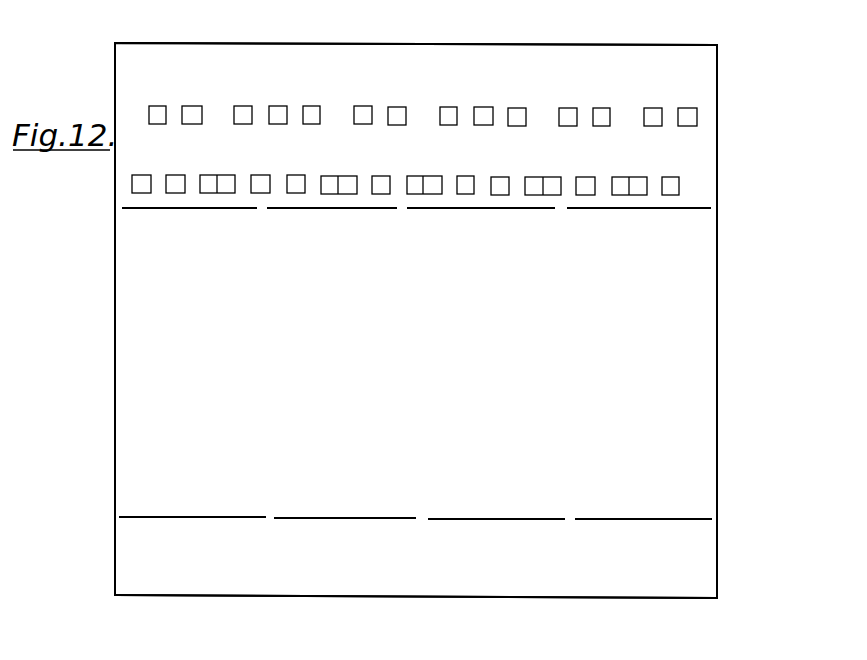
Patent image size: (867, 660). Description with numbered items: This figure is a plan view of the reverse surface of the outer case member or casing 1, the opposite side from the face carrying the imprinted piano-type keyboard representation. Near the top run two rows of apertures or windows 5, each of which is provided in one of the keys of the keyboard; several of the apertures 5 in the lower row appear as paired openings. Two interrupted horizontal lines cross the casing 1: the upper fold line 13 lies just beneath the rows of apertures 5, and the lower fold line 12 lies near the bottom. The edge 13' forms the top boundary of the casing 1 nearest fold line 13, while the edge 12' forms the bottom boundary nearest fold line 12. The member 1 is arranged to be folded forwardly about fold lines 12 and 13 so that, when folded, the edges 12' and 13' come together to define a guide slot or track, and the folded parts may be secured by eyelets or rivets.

The outer case member 1 is at (111, 413).
The aperture 5 is at (210, 182).
The fold line 12 is at (415, 501).
The edge 12' is at (416, 615).
The fold line 13 is at (416, 229).
The edge 13' is at (416, 25).